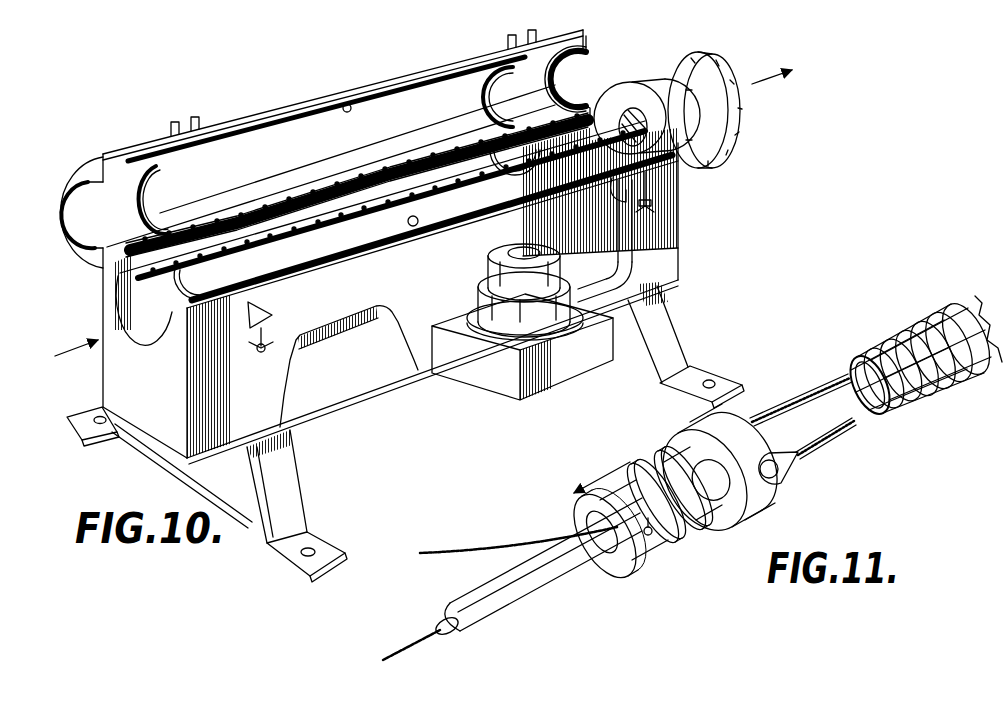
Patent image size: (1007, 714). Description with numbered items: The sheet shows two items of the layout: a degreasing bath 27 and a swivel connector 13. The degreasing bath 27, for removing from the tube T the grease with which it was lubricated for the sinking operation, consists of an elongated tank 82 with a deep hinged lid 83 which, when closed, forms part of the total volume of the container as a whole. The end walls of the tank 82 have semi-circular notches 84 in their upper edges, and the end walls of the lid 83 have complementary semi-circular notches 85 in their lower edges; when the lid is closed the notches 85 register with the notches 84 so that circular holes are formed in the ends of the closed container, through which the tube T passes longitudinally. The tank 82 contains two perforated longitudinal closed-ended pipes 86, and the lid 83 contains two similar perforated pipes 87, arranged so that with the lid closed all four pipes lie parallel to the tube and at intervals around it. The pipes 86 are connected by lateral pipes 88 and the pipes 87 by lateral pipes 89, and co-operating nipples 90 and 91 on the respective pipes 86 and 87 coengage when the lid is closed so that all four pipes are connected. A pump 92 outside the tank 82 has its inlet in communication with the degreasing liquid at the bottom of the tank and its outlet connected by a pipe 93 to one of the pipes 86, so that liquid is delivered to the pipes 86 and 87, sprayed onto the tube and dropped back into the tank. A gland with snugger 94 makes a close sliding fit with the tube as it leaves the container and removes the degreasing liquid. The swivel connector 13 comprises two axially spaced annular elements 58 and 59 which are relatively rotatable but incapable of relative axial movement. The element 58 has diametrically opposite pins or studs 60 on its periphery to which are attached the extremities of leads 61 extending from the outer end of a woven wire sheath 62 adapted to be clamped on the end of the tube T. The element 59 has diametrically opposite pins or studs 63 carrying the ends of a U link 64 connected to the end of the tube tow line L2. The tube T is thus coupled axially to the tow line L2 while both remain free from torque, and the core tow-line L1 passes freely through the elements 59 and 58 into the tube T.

In FIG. 10, the hinged lid 83 is at (133, 150).
In FIG. 10, the semi-circular notches 85 is at (78, 196).
In FIG. 10, the semi-circular notches 84 is at (138, 318).
In FIG. 10, the gland with snugger 94 is at (728, 207).
In FIG. 10, the perforated longitudinal closed-ended pipes 87 is at (271, 134).
In FIG. 10, the nipple 91 is at (351, 111).
In FIG. 10, the lateral pipes 89 is at (148, 212).
In FIG. 10, the lateral pipes 88 is at (197, 295).
In FIG. 10, the perforated longitudinal closed-ended pipes 86 is at (318, 223).
In FIG. 10, the nipple 90 is at (414, 228).
In FIG. 10, the elongated tank 82 is at (282, 423).
In FIG. 10, the degreasing bath 27 is at (357, 382).
In FIG. 10, the pump 92 is at (560, 267).
In FIG. 10, the pipe 93 is at (634, 266).
In FIG. 11, the swivel connector 13 is at (757, 550).
In FIG. 11, the annular element 59 is at (634, 566).
In FIG. 11, the pins or studs 63 is at (652, 536).
In FIG. 11, the annular element 58 is at (762, 505).
In FIG. 11, the pins or studs 60 is at (780, 469).
In FIG. 11, the leads 61 is at (809, 405).
In FIG. 11, the woven wire sheath 62 is at (928, 405).
In FIG. 11, the tube T is at (999, 376).
In FIG. 11, the U link 64 is at (549, 595).
In FIG. 11, the core tow-line L1 is at (517, 547).
In FIG. 11, the tube tow line L2 is at (428, 637).